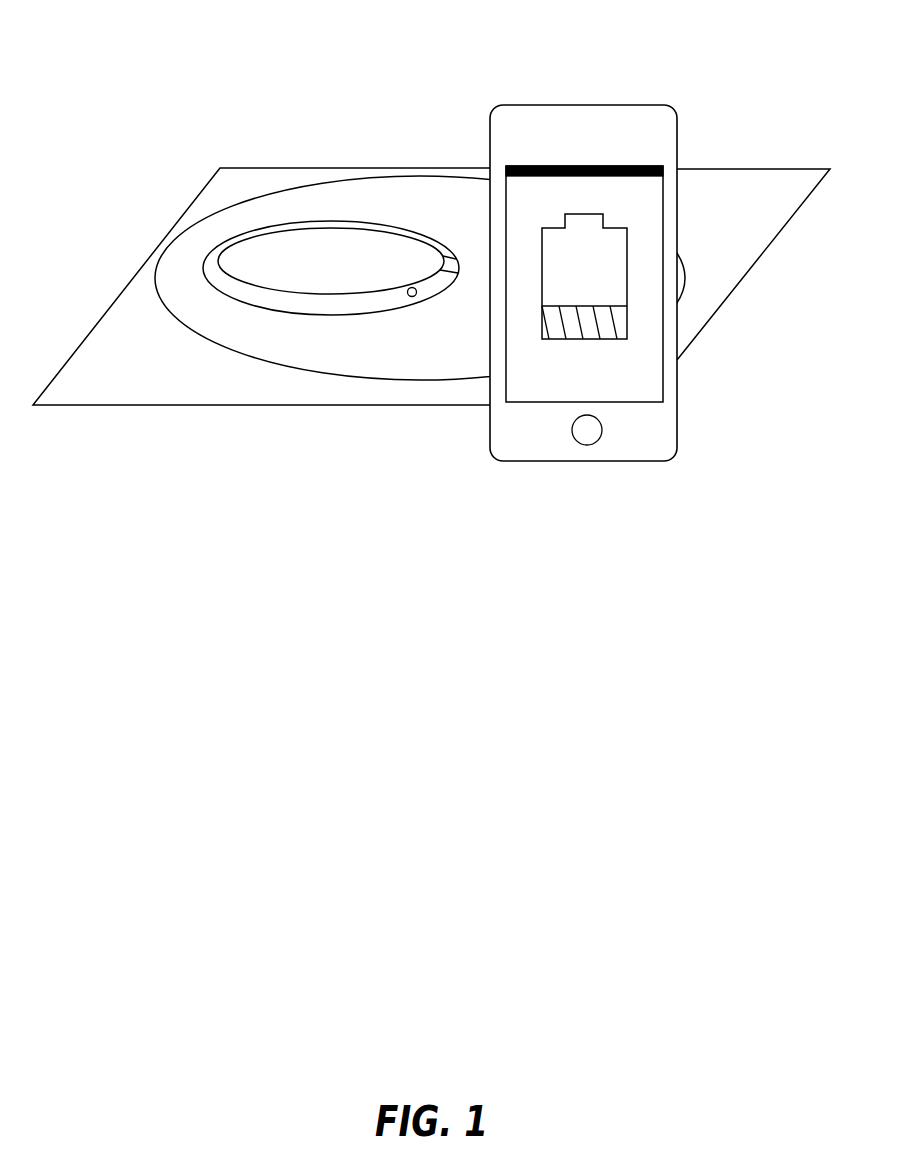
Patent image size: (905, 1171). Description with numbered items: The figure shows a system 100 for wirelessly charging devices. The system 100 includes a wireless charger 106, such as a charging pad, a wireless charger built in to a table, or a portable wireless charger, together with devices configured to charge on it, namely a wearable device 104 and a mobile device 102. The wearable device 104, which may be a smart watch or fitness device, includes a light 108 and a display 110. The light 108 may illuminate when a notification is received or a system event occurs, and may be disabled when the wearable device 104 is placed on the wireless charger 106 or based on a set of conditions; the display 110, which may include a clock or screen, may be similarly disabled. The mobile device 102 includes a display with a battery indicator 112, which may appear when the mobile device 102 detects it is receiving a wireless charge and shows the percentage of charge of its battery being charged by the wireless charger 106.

The system 100 is at (703, 33).
The mobile device 102 is at (578, 262).
The wearable device 104 is at (331, 223).
The wireless charger 106 is at (255, 357).
The light 108 is at (413, 298).
The display 110 is at (318, 295).
The battery indicator 112 is at (627, 233).